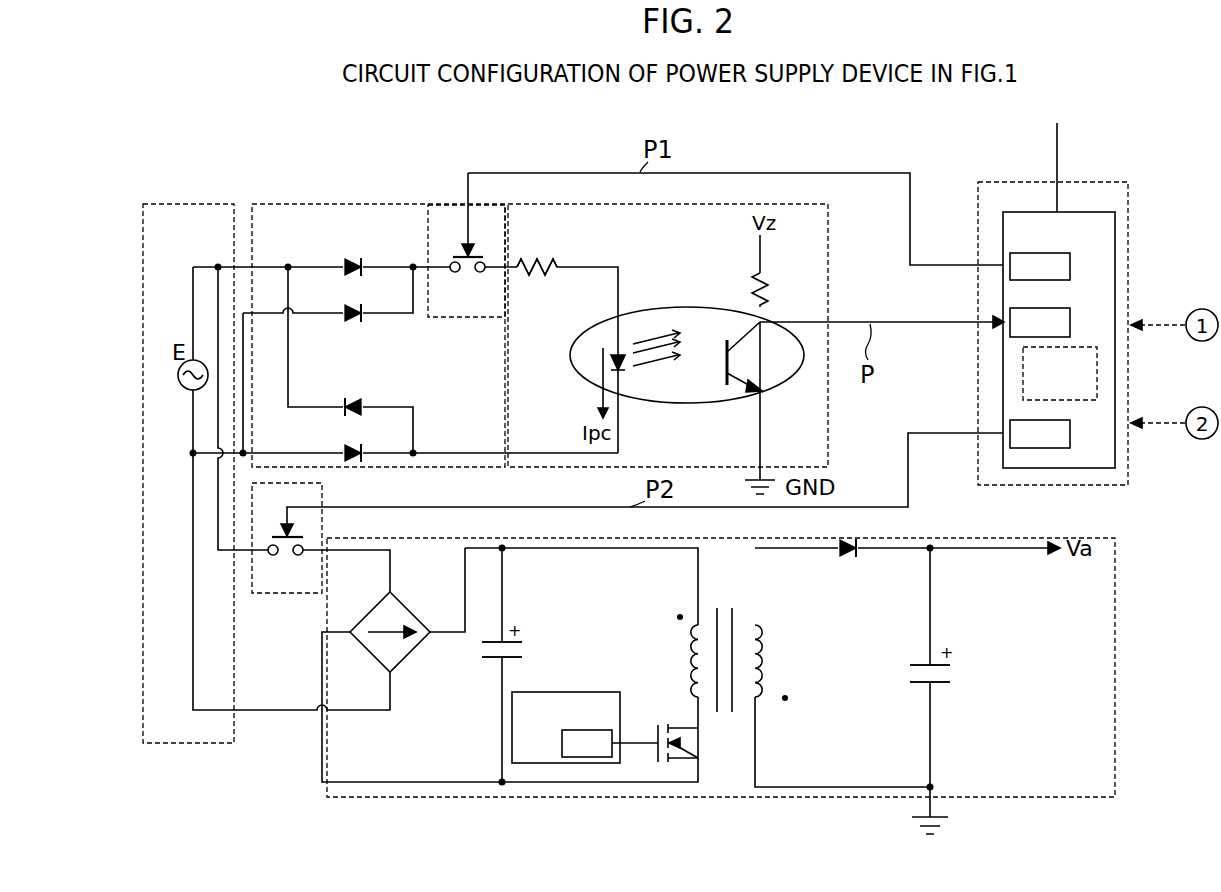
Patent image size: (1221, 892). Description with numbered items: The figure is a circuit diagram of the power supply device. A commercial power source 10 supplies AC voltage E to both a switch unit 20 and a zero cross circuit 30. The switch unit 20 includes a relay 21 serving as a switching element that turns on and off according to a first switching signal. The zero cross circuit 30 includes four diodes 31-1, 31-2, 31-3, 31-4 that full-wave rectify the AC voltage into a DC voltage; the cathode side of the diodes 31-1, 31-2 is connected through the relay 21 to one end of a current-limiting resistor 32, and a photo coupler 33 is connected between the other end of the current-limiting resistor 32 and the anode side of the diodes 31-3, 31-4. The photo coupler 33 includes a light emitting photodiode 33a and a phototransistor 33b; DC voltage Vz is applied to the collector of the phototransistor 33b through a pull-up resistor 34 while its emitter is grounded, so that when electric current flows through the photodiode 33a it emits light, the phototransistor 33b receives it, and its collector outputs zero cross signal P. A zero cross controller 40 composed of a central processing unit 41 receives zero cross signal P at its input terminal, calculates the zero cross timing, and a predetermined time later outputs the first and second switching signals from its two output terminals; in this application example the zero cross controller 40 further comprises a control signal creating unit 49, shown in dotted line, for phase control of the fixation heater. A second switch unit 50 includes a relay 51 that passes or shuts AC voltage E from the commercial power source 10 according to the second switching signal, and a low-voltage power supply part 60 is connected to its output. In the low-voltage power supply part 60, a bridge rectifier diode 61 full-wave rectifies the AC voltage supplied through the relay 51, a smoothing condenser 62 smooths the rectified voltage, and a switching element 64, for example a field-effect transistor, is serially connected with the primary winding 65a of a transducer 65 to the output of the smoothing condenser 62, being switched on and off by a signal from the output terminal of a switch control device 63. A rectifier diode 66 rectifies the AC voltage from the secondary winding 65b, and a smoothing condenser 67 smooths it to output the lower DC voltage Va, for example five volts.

The commercial power source 10 is at (185, 203).
The switch unit 20 is at (455, 202).
The relay 21 is at (464, 274).
The zero cross circuit 30 is at (285, 203).
The diode 31-1 is at (350, 262).
The diode 31-2 is at (355, 319).
The diode 31-3 is at (365, 401).
The diode 31-4 is at (347, 450).
The current-limiting resistor 32 is at (546, 264).
The photo coupler 33 is at (659, 400).
The light emitting photodiode 33a is at (628, 348).
The phototransistor 33b is at (725, 342).
The pull-up resistor 34 is at (768, 292).
The zero cross controller 40 is at (1006, 181).
The central processing unit (CPU) 41 is at (1073, 212).
The control signal creating unit 49 is at (1098, 360).
The switch unit 50 is at (322, 494).
The relay 51 is at (286, 557).
The low-voltage power supply part 60 is at (1004, 538).
The bridge rectifier diode 61 is at (408, 630).
The smoothing condenser 62 is at (518, 656).
The switch control device 63 is at (570, 692).
The switching element 64 is at (698, 736).
The transducer 65 is at (720, 606).
The primary winding 65a is at (688, 642).
The secondary winding 65b is at (766, 646).
The rectifier diode 66 is at (852, 554).
The smoothing condenser 67 is at (951, 662).